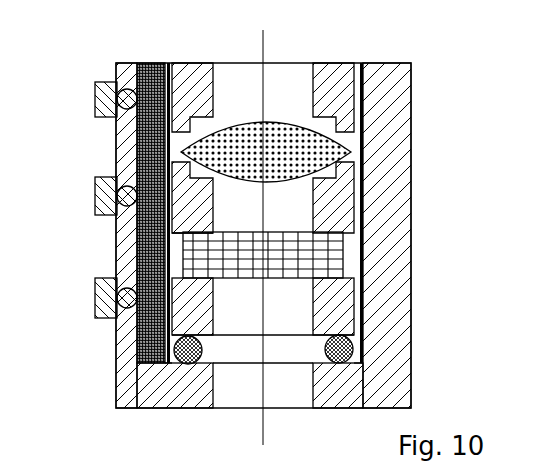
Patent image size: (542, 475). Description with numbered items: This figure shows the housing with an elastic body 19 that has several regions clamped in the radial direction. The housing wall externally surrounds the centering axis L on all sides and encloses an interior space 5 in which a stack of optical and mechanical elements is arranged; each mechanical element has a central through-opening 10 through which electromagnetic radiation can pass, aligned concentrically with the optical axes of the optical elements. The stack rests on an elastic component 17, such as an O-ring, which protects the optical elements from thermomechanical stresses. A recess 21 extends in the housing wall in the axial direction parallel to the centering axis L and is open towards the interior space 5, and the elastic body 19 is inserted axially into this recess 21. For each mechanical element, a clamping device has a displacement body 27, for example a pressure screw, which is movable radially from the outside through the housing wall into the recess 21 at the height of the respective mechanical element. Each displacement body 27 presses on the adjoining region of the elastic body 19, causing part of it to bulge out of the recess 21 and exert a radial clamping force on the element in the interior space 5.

The centering axis L is at (266, 52).
The recess 21 is at (115, 332).
The elastic body 19 is at (138, 147).
The central through-opening 10 is at (299, 104).
The interior space 5 is at (177, 248).
The elastic component 17 is at (358, 348).
The displacement body 27 is at (95, 82).